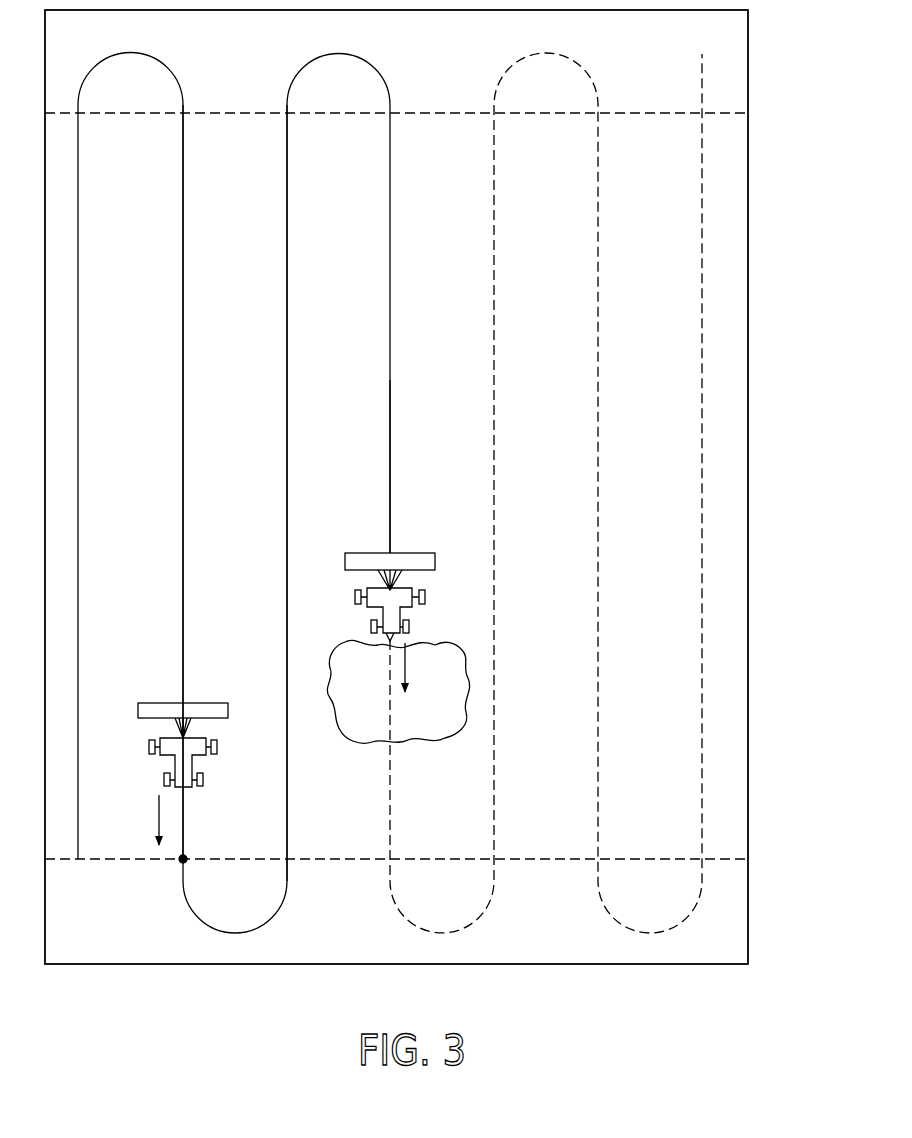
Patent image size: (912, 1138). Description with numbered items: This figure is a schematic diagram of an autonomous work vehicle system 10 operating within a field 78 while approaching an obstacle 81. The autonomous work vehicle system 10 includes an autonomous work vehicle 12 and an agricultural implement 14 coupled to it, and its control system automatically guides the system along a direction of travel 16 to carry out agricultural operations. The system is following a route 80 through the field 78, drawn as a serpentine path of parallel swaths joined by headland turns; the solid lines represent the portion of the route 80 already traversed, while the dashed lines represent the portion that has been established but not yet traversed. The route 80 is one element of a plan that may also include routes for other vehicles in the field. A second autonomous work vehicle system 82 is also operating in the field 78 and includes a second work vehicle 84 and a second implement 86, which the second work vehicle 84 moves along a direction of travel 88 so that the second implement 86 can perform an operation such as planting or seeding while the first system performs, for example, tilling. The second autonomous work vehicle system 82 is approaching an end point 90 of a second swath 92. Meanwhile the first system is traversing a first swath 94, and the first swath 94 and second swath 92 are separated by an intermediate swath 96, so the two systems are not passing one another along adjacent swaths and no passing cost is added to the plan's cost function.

The autonomous work vehicle system 10 is at (386, 552).
The autonomous work vehicle 12 is at (380, 598).
The agricultural implement 14 is at (408, 560).
The direction of travel 16 is at (407, 661).
The field 78 is at (653, 350).
The route 80 is at (391, 338).
The obstacle 81 is at (360, 713).
The second autonomous work vehicle system 82 is at (185, 720).
The second work vehicle 84 is at (192, 748).
The second implement 86 is at (205, 712).
The direction of travel 88 is at (157, 816).
The end point 90 is at (180, 862).
The second swath 92 is at (184, 570).
The first swath 94 is at (391, 392).
The intermediate swath 96 is at (286, 388).